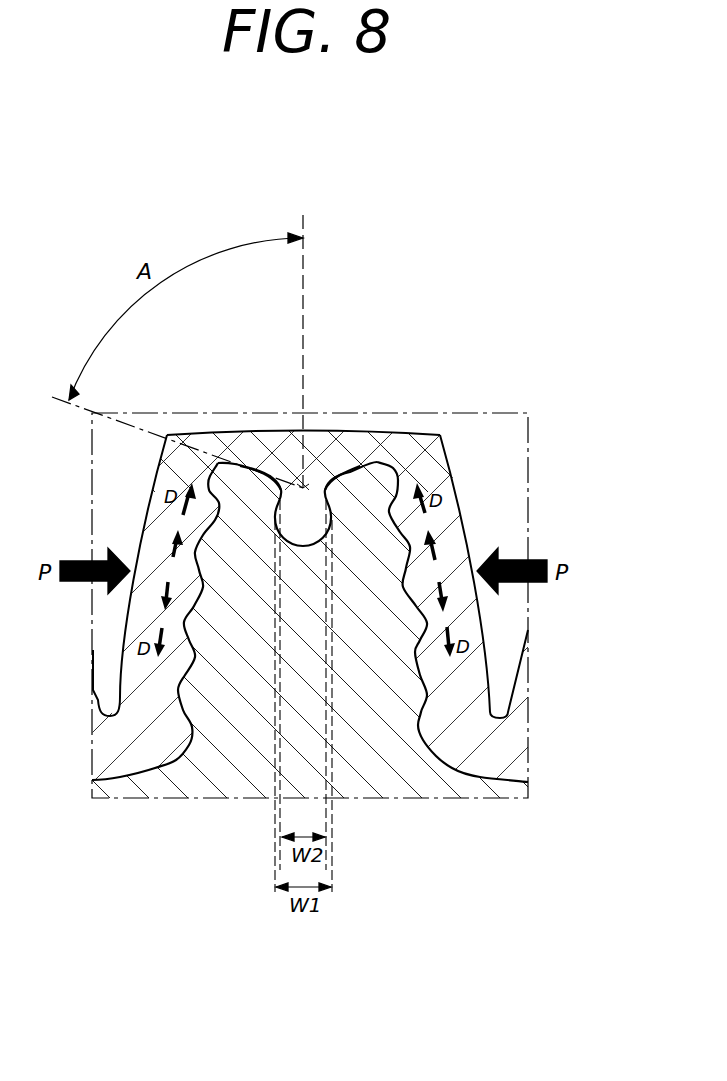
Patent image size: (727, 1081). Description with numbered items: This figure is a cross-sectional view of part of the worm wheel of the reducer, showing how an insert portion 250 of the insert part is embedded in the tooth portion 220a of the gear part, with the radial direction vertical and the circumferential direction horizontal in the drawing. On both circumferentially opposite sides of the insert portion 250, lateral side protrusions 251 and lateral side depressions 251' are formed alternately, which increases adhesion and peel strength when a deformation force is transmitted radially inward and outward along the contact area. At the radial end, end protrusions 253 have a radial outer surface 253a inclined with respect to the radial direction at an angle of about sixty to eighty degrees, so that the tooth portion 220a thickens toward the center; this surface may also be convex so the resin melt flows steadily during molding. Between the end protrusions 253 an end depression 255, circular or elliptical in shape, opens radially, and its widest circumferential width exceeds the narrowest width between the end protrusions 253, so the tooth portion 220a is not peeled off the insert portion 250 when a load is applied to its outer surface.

The tooth portion 220a is at (458, 535).
The insert portion 250 is at (373, 727).
The lateral side protrusion 251 is at (113, 621).
The lateral side depression 251' is at (309, 622).
The end protrusion 253 is at (210, 470).
The radial outer surface 253a is at (250, 468).
The end depression 255 is at (303, 546).